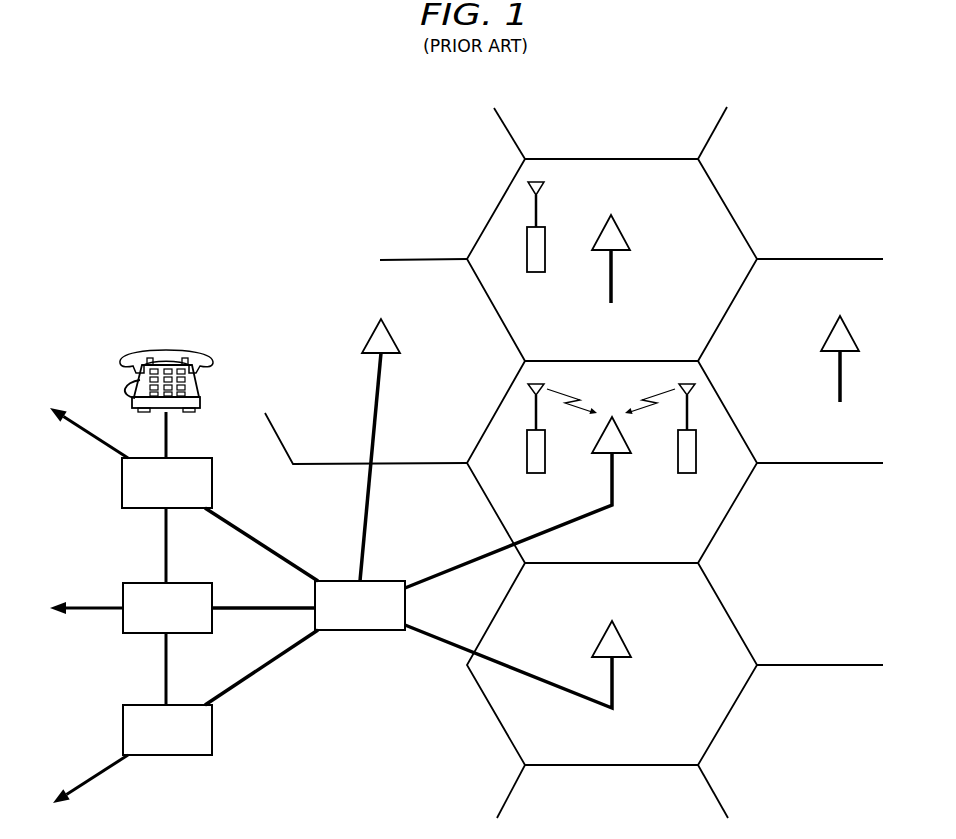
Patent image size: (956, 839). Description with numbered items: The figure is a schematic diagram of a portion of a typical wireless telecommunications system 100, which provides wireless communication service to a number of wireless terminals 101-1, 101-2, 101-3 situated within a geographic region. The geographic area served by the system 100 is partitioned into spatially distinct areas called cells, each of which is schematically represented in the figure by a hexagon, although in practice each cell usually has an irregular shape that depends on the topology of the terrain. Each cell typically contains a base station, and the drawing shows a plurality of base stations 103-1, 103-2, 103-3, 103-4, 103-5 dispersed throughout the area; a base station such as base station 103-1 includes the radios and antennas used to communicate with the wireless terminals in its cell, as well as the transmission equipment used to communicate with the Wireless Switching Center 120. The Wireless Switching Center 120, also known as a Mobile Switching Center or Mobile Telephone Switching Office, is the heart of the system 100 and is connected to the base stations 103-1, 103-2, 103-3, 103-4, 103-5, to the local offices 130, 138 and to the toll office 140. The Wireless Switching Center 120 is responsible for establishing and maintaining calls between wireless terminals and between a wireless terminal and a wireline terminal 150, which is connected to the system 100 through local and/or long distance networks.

The wireless telecommunications system 100 is at (313, 231).
The wireless terminal 101-1 is at (537, 473).
The wireless terminal 101-2 is at (687, 473).
The wireless terminal 101-3 is at (537, 272).
The base station 103-1 is at (612, 483).
The base station 103-2 is at (611, 282).
The base station 103-3 is at (382, 382).
The base station 103-4 is at (838, 380).
The base station 103-5 is at (612, 686).
The Wireless Switching Center 120 is at (357, 630).
The local office 130 is at (122, 483).
The local office 138 is at (123, 729).
The toll office 140 is at (123, 592).
The wireline terminal 150 is at (165, 350).